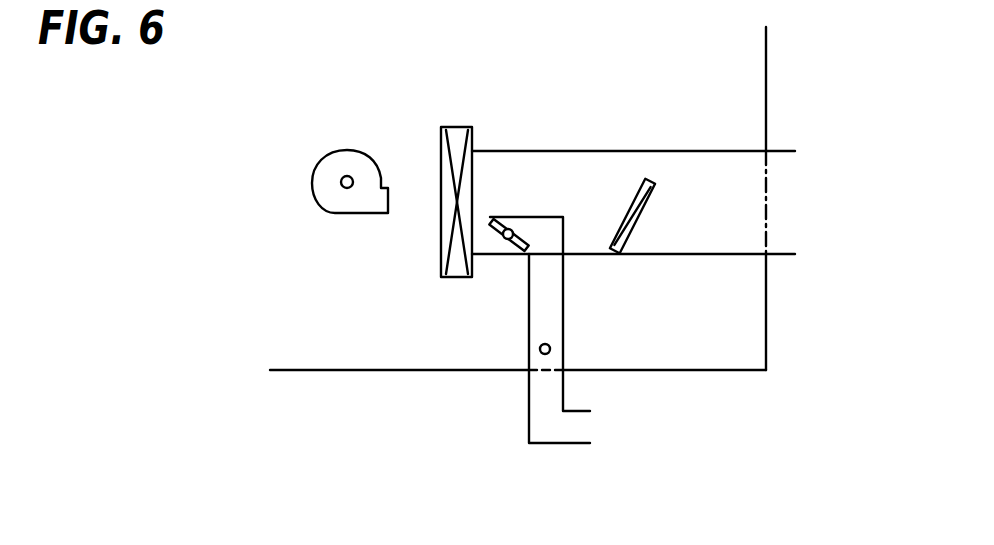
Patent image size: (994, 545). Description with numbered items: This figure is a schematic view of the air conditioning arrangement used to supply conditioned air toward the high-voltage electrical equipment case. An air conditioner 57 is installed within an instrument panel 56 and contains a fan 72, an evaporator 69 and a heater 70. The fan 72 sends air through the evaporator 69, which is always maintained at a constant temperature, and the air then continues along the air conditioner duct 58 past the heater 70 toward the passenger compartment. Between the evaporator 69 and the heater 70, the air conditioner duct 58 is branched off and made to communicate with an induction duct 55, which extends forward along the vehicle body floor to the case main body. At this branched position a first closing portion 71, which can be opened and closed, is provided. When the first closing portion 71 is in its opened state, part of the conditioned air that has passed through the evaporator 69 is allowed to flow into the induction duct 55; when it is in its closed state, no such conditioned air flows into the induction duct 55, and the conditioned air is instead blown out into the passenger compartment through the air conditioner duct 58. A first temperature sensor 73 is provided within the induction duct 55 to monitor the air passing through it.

The induction duct 55 is at (548, 446).
The instrument panel 56 is at (363, 372).
The air conditioner 57 is at (390, 136).
The air conditioner duct 58 is at (578, 151).
The evaporator 69 is at (461, 127).
The heater 70 is at (650, 180).
The first closing portion 71 is at (510, 250).
The fan 72 is at (347, 152).
The first temperature sensor 73 is at (550, 346).